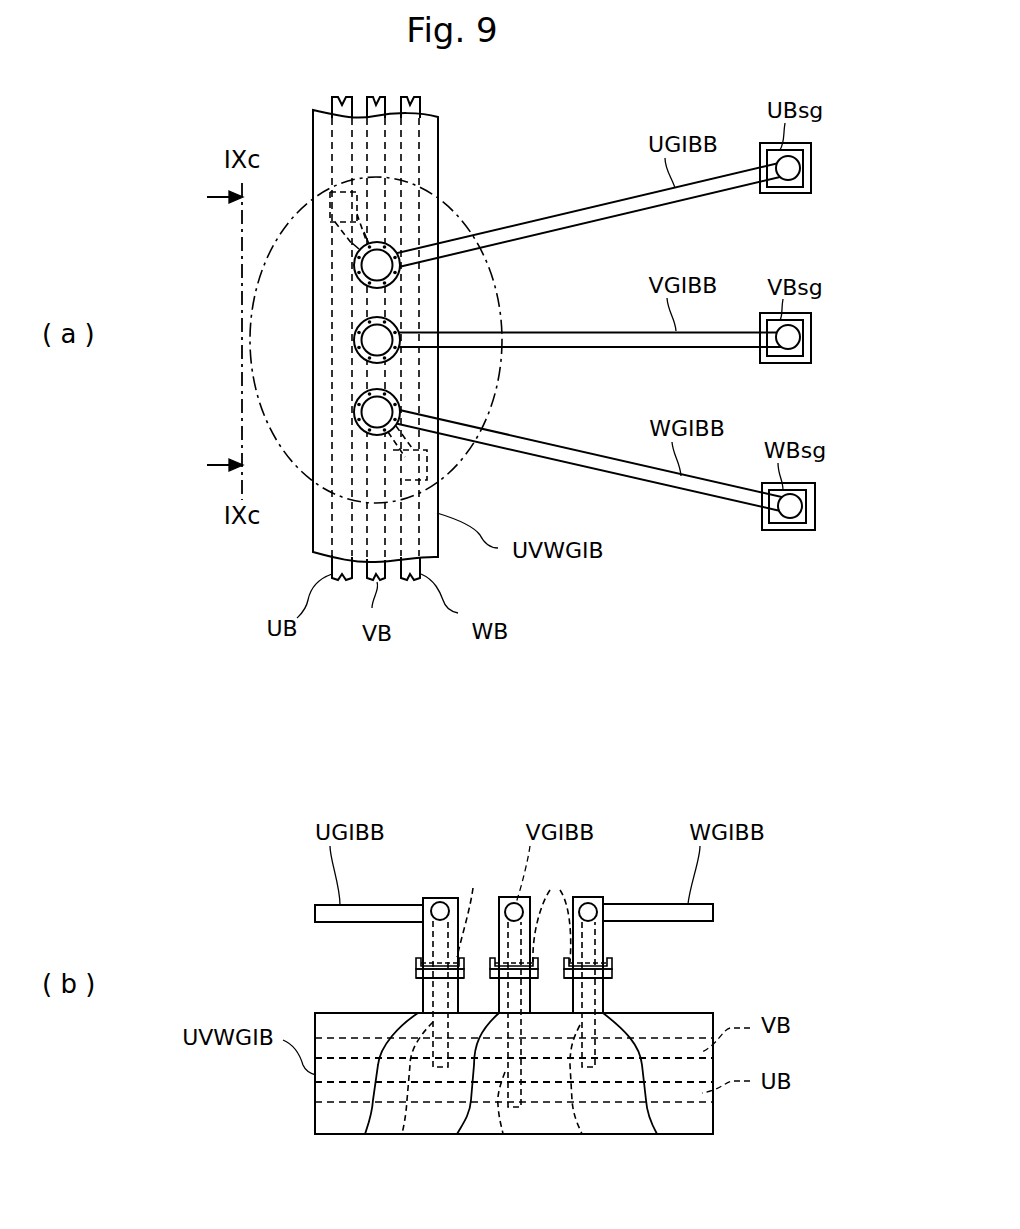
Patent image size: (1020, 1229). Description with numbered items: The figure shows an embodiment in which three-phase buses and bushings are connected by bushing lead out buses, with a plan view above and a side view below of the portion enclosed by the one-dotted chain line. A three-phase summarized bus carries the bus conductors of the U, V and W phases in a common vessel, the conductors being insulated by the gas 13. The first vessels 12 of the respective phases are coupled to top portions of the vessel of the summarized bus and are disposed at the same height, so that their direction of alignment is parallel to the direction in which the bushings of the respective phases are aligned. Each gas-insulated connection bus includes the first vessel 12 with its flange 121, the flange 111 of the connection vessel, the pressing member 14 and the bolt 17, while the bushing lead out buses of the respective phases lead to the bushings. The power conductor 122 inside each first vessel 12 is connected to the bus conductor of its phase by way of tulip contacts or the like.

The first vessel 12 is at (365, 1134).
The gas 13 is at (423, 941).
The pressing member 14 is at (356, 270).
The bolt 17 is at (416, 963).
The flange of the connection vessel 111 is at (517, 914).
The flange of the first vessel 121 is at (416, 978).
The power conductor 122 is at (402, 1134).